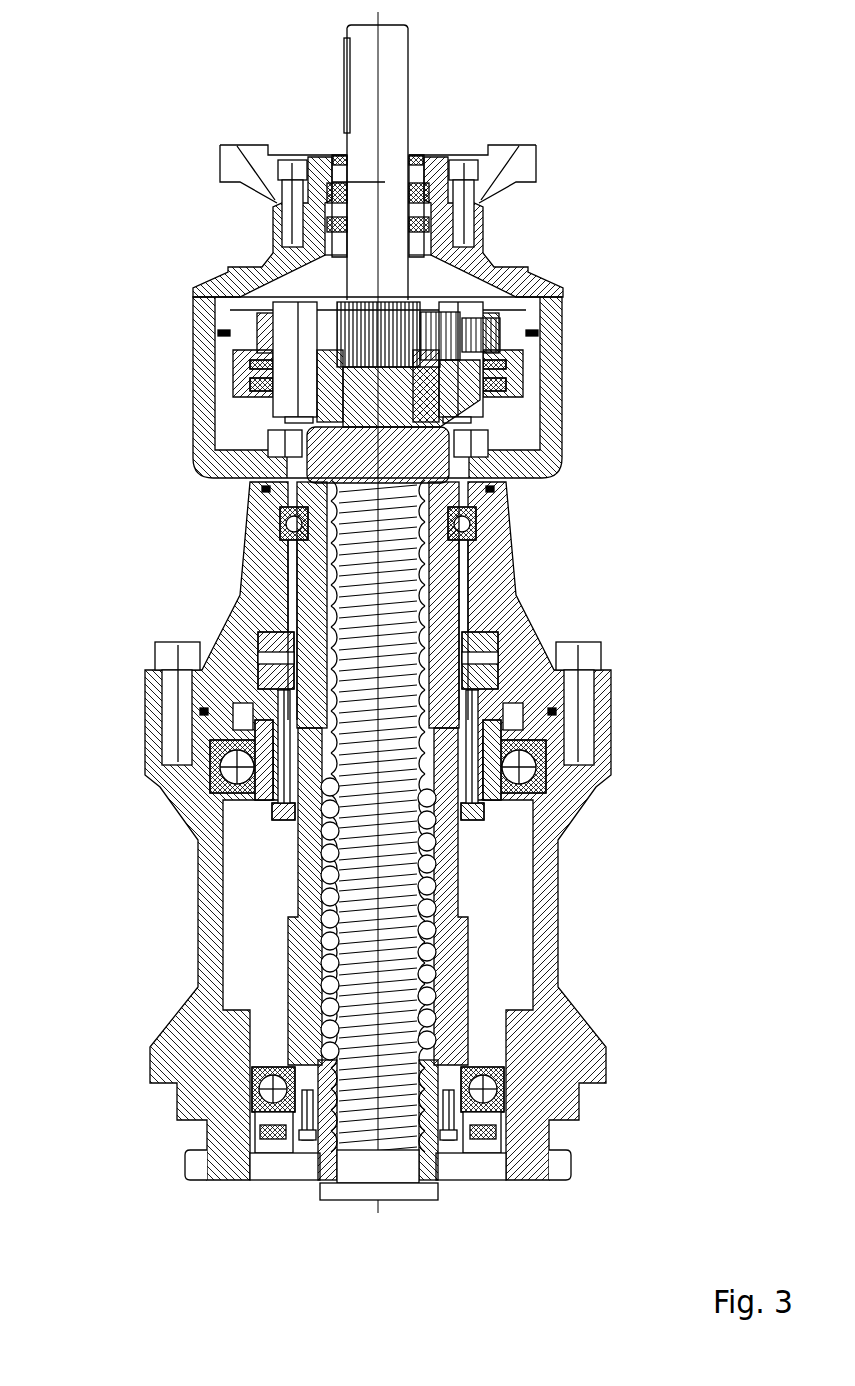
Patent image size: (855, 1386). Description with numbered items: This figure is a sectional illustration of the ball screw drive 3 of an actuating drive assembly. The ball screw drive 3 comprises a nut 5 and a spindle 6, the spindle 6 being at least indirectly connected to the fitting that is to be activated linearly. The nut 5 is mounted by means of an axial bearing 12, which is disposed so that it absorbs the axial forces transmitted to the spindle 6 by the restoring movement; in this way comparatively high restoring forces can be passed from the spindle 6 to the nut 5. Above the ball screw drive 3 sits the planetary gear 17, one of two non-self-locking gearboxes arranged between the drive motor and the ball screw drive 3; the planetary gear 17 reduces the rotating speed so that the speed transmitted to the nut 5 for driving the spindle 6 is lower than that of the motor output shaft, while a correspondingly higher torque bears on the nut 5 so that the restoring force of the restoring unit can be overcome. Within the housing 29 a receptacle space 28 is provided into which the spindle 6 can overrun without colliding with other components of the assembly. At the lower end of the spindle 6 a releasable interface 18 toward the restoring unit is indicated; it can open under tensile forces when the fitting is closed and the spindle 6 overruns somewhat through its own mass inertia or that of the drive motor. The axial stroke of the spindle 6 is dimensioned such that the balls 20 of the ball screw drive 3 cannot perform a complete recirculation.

The ball screw drive 3 is at (142, 540).
The planetary gear 17 is at (172, 325).
The receptacle space 28 is at (397, 470).
The housing 29 is at (497, 538).
The axial bearing 12 is at (483, 643).
The nut 5 is at (445, 880).
The spindle 6 is at (392, 893).
The balls 20 is at (430, 968).
The releasable interface 18 is at (442, 1208).